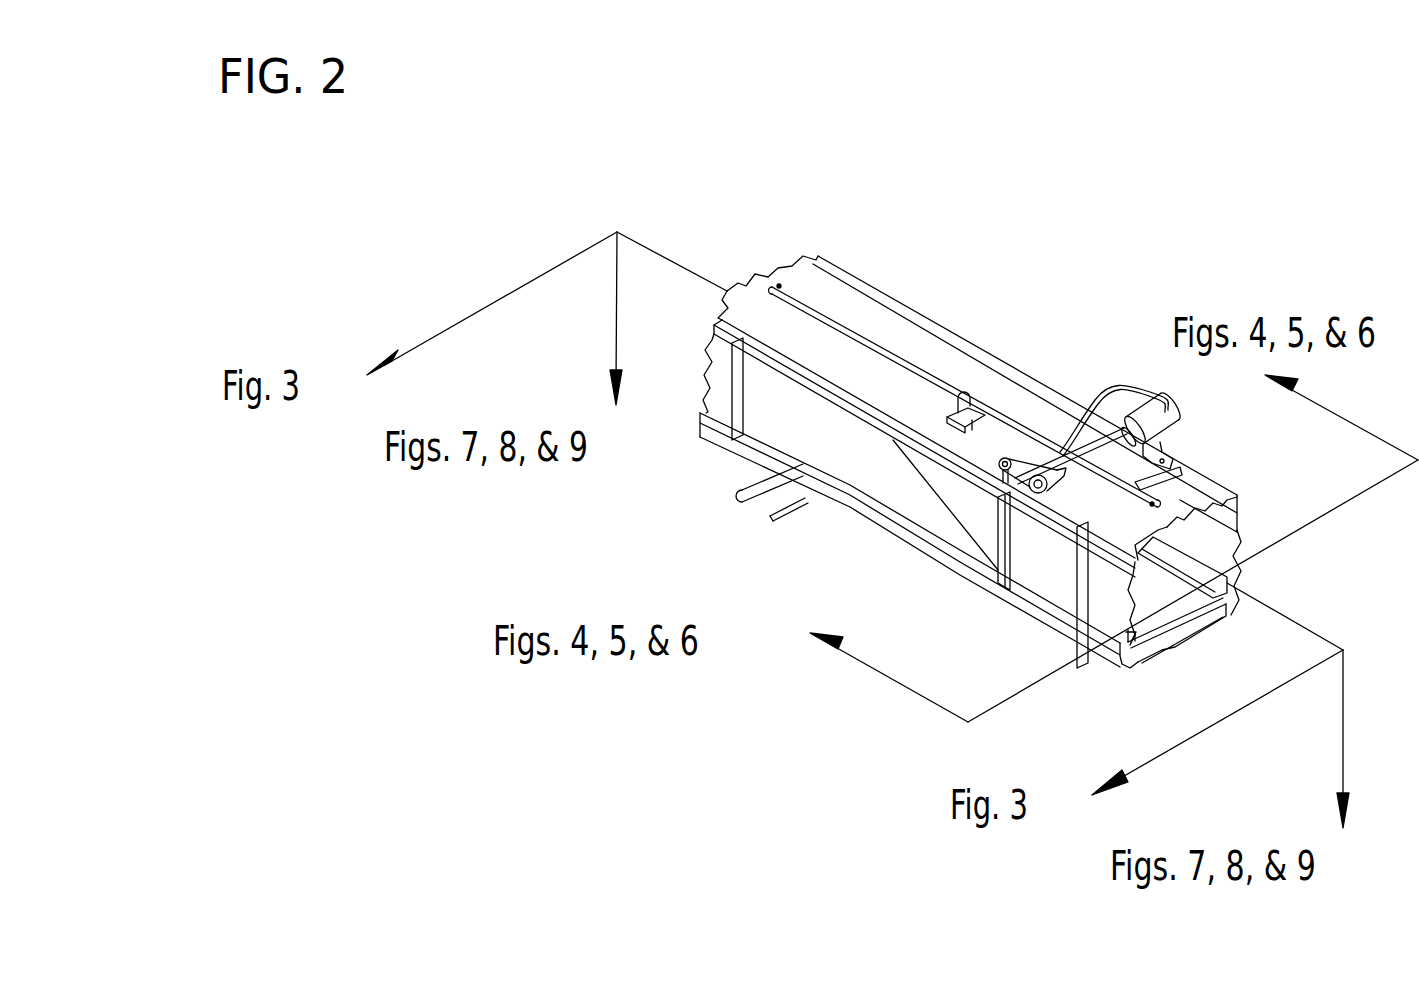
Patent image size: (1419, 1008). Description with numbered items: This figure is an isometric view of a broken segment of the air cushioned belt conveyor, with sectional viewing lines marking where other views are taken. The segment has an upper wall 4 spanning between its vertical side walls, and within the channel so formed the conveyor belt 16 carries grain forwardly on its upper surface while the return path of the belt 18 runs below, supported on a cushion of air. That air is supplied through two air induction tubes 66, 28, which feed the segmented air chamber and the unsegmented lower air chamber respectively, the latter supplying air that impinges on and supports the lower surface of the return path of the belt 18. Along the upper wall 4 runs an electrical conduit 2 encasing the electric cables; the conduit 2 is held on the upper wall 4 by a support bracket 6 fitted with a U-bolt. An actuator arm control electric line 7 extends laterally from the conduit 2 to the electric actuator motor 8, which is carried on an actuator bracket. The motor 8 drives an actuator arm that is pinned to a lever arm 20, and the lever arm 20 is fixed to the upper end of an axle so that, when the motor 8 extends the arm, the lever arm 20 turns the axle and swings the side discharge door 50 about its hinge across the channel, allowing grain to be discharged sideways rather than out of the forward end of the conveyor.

The electrical conduit 2 is at (797, 293).
The upper wall 4 is at (838, 305).
The support bracket 6 is at (979, 398).
The actuator arm control electric line 7 is at (1100, 396).
The electric actuator motor 8 is at (1168, 397).
The conveyor belt 16 is at (823, 435).
The return path of the belt 18 is at (1145, 655).
The lever arm 20 is at (1020, 458).
The air induction tube 28 is at (788, 523).
The side discharge door 50 is at (953, 483).
The air induction tube 66 is at (740, 492).